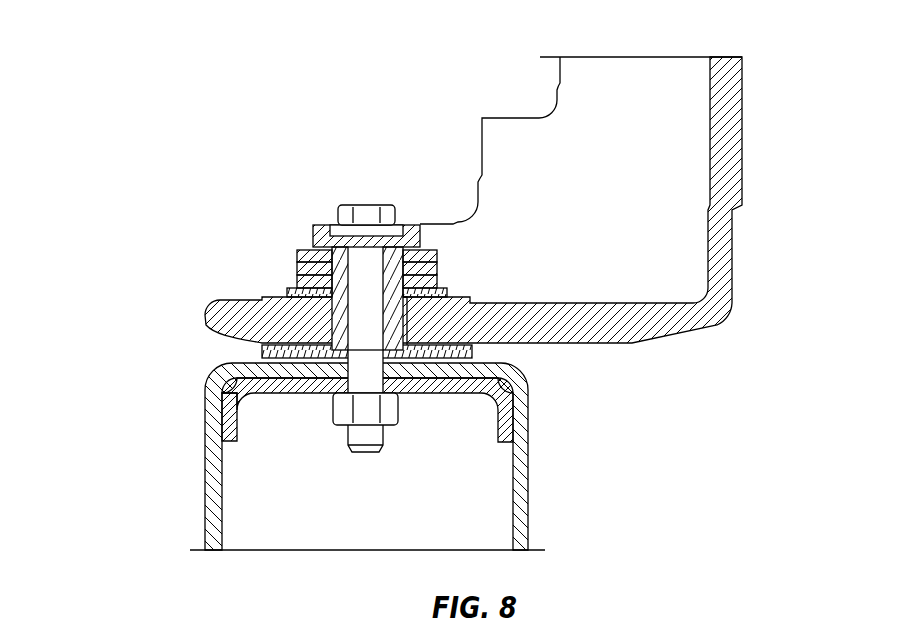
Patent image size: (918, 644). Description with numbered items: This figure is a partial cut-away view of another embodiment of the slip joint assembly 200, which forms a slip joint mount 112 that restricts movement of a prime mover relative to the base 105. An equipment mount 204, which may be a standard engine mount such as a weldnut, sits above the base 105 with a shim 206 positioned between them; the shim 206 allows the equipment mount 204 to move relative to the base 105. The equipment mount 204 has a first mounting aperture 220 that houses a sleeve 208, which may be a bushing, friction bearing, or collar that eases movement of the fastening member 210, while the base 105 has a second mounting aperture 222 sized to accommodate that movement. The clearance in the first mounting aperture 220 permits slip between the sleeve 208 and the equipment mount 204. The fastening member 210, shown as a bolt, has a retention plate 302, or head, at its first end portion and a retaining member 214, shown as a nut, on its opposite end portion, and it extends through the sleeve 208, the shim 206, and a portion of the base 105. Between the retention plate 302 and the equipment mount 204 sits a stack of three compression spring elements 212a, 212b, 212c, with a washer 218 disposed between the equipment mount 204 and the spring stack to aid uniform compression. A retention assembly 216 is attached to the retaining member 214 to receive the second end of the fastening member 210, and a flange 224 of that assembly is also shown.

The slip joint assembly 200 is at (419, 248).
The base 105 is at (204, 482).
The slip joint mount 112 is at (572, 456).
The equipment mount 204 is at (598, 345).
The shim 206 is at (262, 354).
The sleeve 208 is at (420, 232).
The fastening member 210 is at (357, 203).
The retention plate 302 is at (378, 205).
The compression spring 212a is at (297, 280).
The compression spring 212b is at (297, 266).
The compression spring 212c is at (298, 254).
The retaining member 214 is at (404, 410).
The retention assembly 216 is at (299, 396).
The washer 218 is at (447, 292).
The first mounting aperture 220 is at (408, 328).
The second mounting aperture 222 is at (388, 372).
The flange 224 is at (238, 430).